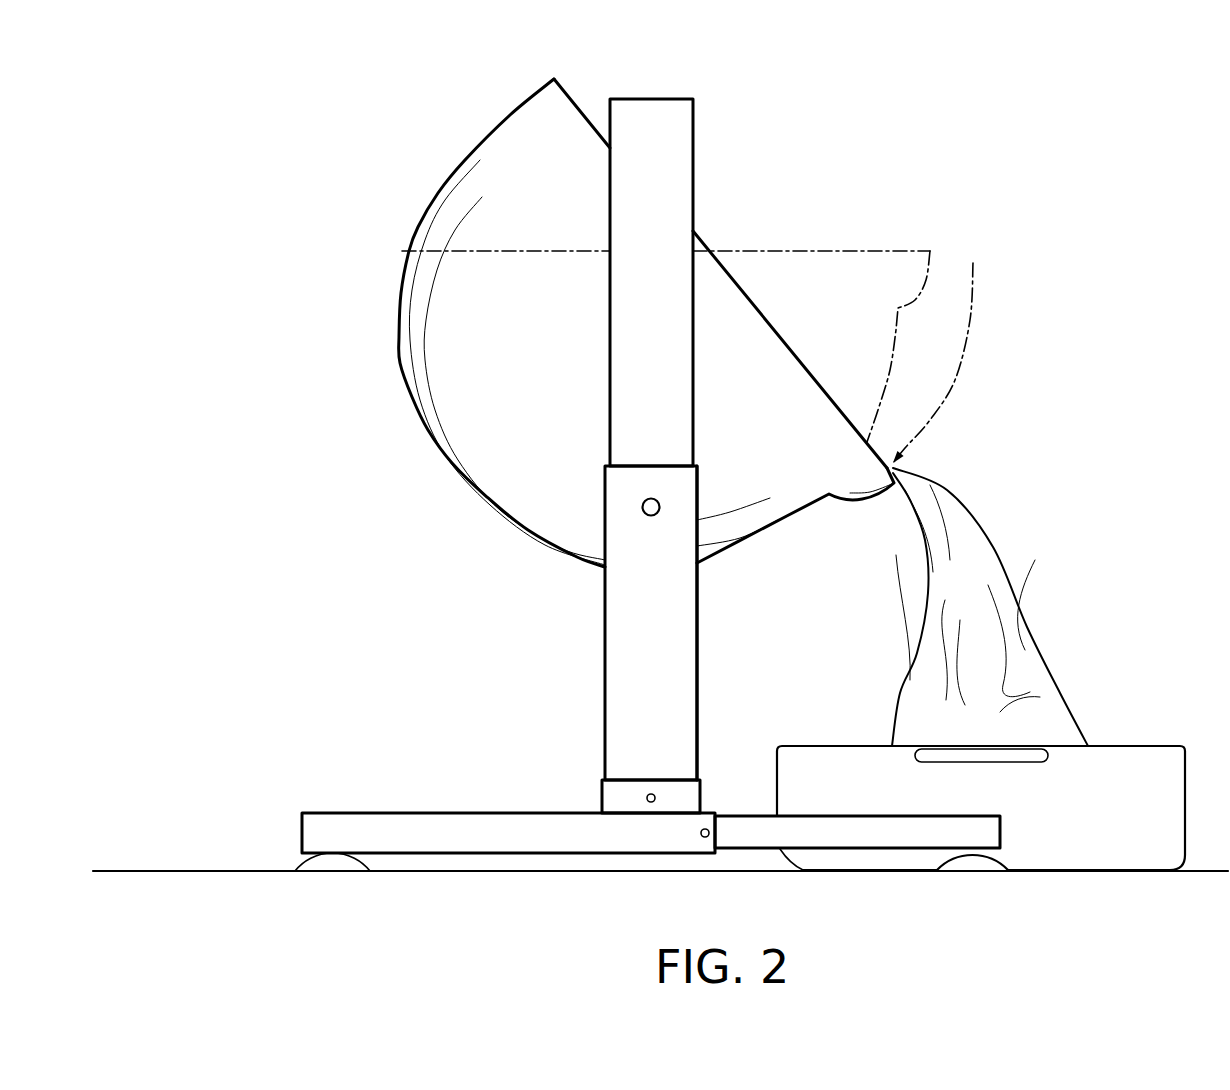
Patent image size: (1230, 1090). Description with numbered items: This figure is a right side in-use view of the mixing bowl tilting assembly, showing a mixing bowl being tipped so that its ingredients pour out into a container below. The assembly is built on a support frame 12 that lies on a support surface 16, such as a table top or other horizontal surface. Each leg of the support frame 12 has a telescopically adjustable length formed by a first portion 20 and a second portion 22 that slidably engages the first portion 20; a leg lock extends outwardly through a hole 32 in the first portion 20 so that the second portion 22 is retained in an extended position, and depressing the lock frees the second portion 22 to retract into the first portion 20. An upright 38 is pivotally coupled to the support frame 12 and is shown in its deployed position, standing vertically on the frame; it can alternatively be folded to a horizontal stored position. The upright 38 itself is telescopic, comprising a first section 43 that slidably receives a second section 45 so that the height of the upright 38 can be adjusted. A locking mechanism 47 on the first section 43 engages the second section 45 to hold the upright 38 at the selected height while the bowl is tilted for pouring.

The support frame 12 is at (362, 797).
The support surface 16 is at (188, 871).
The first portion 20 is at (490, 815).
The second portion 22 is at (853, 813).
The hole 32 is at (705, 838).
The upright 38 is at (643, 625).
The first section 43 is at (697, 715).
The second section 45 is at (650, 147).
The locking mechanism 47 is at (643, 508).